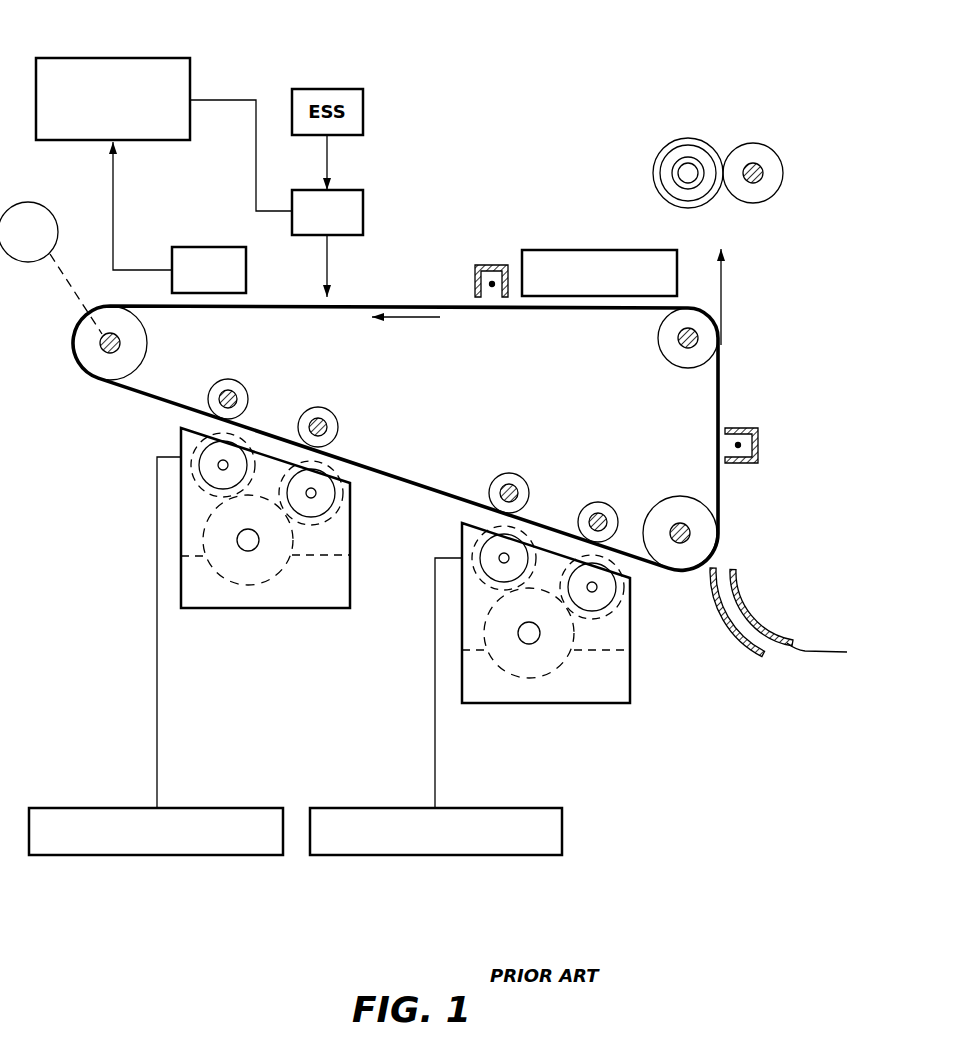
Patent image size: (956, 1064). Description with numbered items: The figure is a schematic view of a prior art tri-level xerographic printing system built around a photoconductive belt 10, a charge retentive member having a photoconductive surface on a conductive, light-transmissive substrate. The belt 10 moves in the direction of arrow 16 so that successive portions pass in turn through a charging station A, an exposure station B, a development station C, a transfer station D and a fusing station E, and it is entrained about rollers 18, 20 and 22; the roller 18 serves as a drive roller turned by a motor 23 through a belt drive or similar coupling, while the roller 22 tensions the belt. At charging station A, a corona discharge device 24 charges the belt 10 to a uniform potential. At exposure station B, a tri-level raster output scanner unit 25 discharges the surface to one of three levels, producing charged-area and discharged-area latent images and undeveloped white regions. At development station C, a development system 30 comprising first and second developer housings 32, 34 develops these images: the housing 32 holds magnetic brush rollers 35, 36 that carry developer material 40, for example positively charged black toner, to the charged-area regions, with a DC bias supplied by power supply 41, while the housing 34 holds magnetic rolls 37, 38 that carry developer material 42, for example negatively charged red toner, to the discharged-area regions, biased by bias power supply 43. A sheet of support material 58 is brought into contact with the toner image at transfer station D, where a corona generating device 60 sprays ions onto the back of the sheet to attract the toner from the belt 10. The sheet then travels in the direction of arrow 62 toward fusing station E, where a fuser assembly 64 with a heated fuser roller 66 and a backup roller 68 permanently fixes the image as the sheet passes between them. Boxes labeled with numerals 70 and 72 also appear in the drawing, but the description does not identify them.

The photoconductive belt 10 is at (720, 392).
The arrow 16 is at (385, 320).
The roller 18 is at (140, 342).
The roller 20 is at (671, 507).
The roller 22 is at (673, 352).
The motor 23 is at (46, 208).
The corona discharge device 24 is at (488, 266).
The tri-level raster output scanner (ROS) unit 25 is at (352, 230).
The development system 30 is at (210, 640).
The first developer housing 32 is at (262, 612).
The second developer housing 34 is at (575, 705).
The magnetic brush roller 35 is at (230, 441).
The magnetic brush roller 36 is at (326, 471).
The magnetic roll 37 is at (498, 543).
The magnetic roll 38 is at (588, 566).
The developer material 40 is at (196, 555).
The power supply 41 is at (110, 858).
The developer material 42 is at (605, 646).
The bias power supply 43 is at (527, 858).
The sheet of support material 58 is at (812, 652).
The corona generating device 60 is at (760, 450).
The arrow 62 is at (722, 304).
The fuser assembly 64 is at (733, 164).
The heated fuser roller 66 is at (698, 143).
The backup roller 68 is at (766, 152).
The electrostatic voltmeter (ESV) 70 is at (198, 246).
The control logic 72 is at (160, 64).
The charging station A is at (477, 228).
The exposure station B is at (359, 217).
The development station C is at (497, 675).
The transfer station D is at (775, 416).
The fusing station E is at (580, 237).